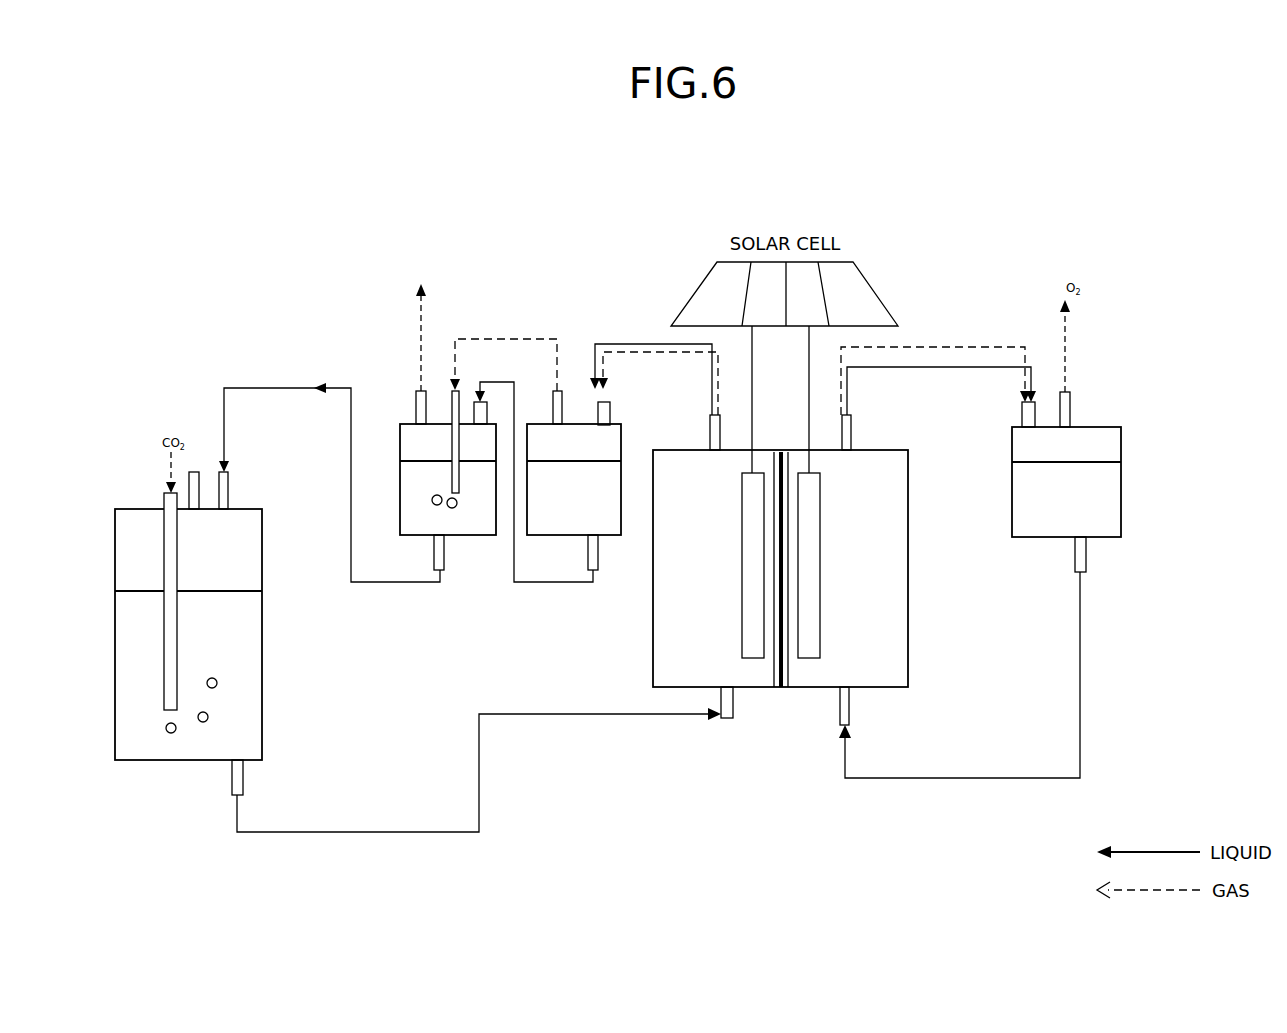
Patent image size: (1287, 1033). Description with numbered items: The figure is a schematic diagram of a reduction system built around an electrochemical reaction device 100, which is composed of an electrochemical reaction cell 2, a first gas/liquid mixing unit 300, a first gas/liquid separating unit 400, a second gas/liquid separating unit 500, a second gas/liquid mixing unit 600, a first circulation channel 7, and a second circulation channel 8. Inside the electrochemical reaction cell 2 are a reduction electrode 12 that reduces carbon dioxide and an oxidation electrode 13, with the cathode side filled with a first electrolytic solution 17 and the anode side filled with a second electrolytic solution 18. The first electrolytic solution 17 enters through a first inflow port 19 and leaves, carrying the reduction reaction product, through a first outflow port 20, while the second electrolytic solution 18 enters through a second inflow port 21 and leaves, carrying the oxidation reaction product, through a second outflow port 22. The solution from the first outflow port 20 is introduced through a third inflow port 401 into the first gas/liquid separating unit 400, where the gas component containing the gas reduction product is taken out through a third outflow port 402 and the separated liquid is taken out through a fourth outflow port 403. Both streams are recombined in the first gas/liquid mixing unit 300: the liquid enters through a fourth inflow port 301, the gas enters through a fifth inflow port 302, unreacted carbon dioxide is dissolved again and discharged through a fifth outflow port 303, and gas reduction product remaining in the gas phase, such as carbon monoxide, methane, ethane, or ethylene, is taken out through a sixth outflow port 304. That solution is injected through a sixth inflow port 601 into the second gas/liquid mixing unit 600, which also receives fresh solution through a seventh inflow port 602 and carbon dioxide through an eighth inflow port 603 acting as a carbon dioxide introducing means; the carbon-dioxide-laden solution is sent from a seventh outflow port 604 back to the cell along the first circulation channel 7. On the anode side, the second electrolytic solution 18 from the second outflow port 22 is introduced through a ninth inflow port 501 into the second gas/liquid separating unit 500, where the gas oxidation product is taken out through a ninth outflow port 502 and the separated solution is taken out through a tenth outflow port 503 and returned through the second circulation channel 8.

The electrochemical reaction device 100 is at (497, 233).
The electrochemical reaction cell 2 is at (912, 564).
The reduction electrode 12 is at (750, 565).
The oxidation electrode 13 is at (810, 565).
The first electrolytic solution 17 is at (194, 468).
The second electrolytic solution 18 is at (880, 634).
The first inflow port 19 is at (730, 728).
The first outflow port 20 is at (710, 425).
The second inflow port 21 is at (853, 705).
The second outflow port 22 is at (852, 433).
The first circulation channel 7 is at (372, 833).
The second circulation channel 8 is at (920, 782).
The first gas/liquid mixing unit 300 is at (415, 560).
The fourth inflow port 301 is at (487, 417).
The fifth inflow port 302 is at (457, 382).
The fifth outflow port 303 is at (437, 553).
The sixth outflow port 304 is at (415, 393).
The first gas/liquid separating unit 400 is at (557, 562).
The third inflow port 401 is at (612, 405).
The third outflow port 402 is at (558, 392).
The fourth outflow port 403 is at (598, 573).
The second gas/liquid separating unit 500 is at (1135, 498).
The ninth inflow port 501 is at (1020, 415).
The ninth outflow port 502 is at (1071, 410).
The tenth outflow port 503 is at (1086, 553).
The second gas/liquid mixing unit 600 is at (150, 772).
The sixth inflow port 601 is at (230, 484).
The seventh inflow port 602 is at (185, 512).
The eighth inflow port 603 is at (157, 535).
The seventh outflow port 604 is at (243, 777).